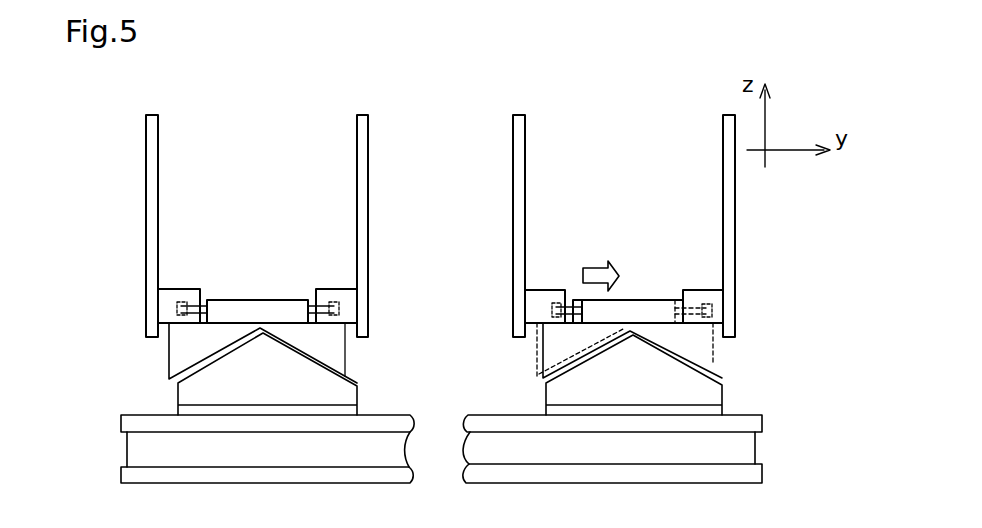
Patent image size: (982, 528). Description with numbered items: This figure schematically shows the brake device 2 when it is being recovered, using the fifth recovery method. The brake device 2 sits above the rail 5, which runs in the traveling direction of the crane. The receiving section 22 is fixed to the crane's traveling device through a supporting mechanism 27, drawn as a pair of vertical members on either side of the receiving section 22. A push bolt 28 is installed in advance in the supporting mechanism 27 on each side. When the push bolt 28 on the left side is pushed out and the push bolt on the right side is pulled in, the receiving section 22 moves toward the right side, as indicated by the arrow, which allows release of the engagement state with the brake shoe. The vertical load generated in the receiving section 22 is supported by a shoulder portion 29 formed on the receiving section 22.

The brake device 2 is at (134, 113).
The rail 5 is at (496, 425).
The receiving section 22 is at (350, 393).
The supporting mechanism 27 is at (147, 226).
The push bolt 28 is at (188, 302).
The shoulder portion 29 is at (179, 338).